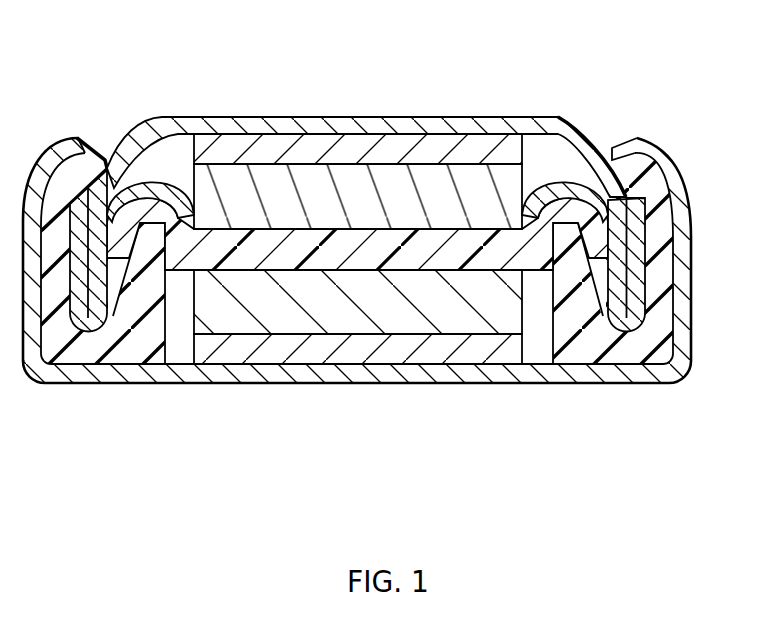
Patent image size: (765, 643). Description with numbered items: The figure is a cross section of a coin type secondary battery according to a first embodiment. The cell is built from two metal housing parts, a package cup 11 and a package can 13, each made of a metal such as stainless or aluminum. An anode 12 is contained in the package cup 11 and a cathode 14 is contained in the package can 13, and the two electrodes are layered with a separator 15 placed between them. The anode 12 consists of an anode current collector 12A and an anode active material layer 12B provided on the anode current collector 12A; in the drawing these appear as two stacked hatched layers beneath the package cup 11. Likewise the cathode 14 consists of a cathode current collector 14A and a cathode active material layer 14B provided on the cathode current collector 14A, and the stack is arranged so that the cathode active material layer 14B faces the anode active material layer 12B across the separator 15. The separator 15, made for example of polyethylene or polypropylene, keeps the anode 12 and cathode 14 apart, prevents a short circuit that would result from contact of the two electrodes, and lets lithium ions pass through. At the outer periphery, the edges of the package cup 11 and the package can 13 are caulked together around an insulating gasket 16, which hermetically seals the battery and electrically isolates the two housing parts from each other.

The package cup 11 is at (193, 128).
The anode 12 is at (358, 117).
The anode current collector 12A is at (290, 145).
The anode active material layer 12B is at (265, 52).
The package can 13 is at (238, 374).
The cathode 14 is at (358, 388).
The cathode current collector 14A is at (502, 450).
The cathode active material layer 14B is at (466, 330).
The separator 15 is at (568, 192).
The insulating gasket 16 is at (125, 348).